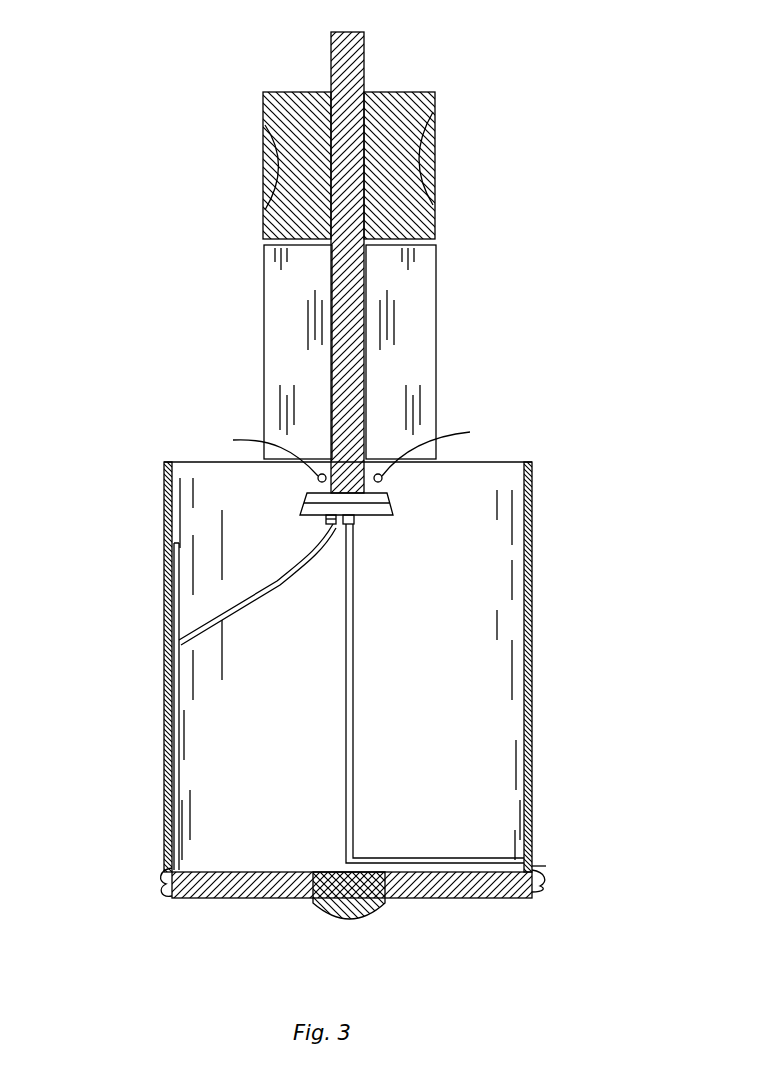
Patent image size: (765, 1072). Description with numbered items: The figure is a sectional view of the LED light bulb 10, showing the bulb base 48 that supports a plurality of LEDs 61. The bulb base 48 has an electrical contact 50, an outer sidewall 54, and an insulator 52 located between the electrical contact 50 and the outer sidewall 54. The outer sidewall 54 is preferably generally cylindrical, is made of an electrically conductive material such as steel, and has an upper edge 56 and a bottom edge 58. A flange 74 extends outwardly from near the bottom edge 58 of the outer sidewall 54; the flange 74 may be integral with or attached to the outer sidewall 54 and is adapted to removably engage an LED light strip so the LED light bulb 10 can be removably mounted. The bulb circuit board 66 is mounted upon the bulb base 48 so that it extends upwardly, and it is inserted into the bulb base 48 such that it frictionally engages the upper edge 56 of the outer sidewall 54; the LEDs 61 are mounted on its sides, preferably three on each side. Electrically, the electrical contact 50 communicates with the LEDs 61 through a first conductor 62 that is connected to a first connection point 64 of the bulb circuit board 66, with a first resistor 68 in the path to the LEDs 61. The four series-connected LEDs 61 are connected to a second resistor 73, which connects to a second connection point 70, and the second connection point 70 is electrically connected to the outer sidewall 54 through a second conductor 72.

The LED light bulb 10 is at (585, 578).
The bulb base 48 is at (106, 620).
The electrical contact 50 is at (164, 868).
The insulator 52 is at (215, 890).
The outer sidewall 54 is at (164, 705).
The upper edge 56 is at (532, 482).
The bottom edge 58 is at (532, 828).
The LEDs 61 is at (263, 168).
The first conductor 62 is at (354, 640).
The first connection point 64 is at (356, 526).
The bulb circuit board 66 is at (331, 40).
The first resistor 68 is at (260, 455).
The second connection point 70 is at (326, 524).
The second conductor 72 is at (245, 612).
The second resistor 73 is at (438, 455).
The flange 74 is at (545, 888).